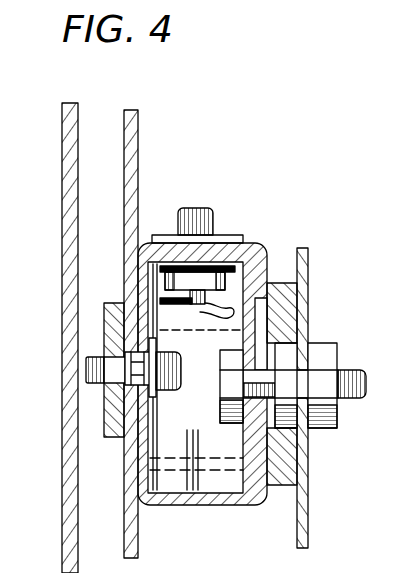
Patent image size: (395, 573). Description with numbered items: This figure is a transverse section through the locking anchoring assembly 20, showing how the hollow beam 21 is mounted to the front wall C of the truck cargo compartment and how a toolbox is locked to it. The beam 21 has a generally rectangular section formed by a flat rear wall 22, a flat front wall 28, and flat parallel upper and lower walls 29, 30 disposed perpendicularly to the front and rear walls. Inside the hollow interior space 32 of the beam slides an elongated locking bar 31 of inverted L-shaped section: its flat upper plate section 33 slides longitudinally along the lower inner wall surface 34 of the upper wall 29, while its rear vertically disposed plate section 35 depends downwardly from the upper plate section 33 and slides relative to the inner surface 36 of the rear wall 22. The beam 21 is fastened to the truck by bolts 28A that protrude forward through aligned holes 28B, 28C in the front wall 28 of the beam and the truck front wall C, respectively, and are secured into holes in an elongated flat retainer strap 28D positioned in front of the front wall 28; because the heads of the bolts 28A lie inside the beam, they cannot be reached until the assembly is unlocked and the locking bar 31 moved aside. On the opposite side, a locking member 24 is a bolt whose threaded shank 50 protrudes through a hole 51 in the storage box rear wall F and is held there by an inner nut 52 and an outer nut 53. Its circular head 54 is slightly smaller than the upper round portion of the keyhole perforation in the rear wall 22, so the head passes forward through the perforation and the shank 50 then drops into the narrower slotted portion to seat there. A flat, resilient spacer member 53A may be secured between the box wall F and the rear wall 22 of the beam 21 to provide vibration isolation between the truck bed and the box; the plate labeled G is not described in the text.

The locking anchoring assembly 20 is at (207, 195).
The hollow beam 21 is at (234, 243).
The rear wall 22 is at (266, 262).
The locking member 24 is at (352, 370).
The front wall 28 is at (202, 393).
The bolts 28A is at (165, 398).
The hole 28B is at (125, 303).
The hole 28C is at (104, 397).
The retainer strap 28D is at (114, 437).
The upper wall 29 is at (148, 243).
The lower wall 30 is at (200, 512).
The locking bar 31 is at (212, 369).
The hollow interior space 32 is at (228, 461).
The upper plate section 33 is at (143, 266).
The lower inner wall surface 34 is at (141, 258).
The rear vertically disposed plate section 35 is at (225, 316).
The inner surface 36 is at (250, 505).
The threaded shank 50 is at (338, 398).
The hole 51 is at (302, 345).
The inner nut 52 is at (322, 430).
The outer nut 53 is at (282, 486).
The resilient spacer member 53A is at (283, 283).
The circular head 54 is at (224, 397).
The front wall C is at (138, 160).
The storage box rear wall F is at (308, 527).
The guard plate G is at (78, 140).